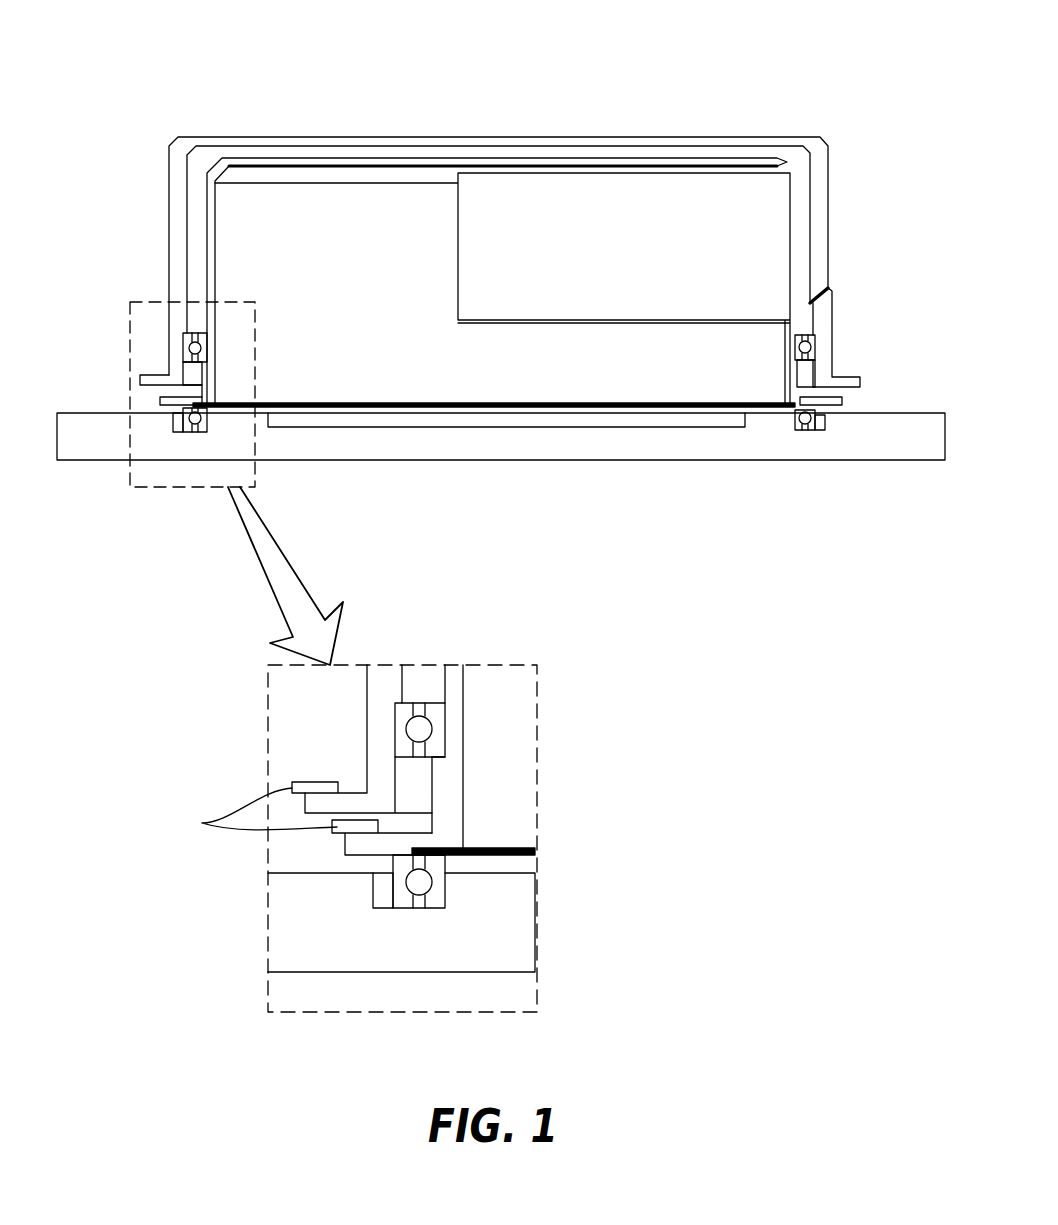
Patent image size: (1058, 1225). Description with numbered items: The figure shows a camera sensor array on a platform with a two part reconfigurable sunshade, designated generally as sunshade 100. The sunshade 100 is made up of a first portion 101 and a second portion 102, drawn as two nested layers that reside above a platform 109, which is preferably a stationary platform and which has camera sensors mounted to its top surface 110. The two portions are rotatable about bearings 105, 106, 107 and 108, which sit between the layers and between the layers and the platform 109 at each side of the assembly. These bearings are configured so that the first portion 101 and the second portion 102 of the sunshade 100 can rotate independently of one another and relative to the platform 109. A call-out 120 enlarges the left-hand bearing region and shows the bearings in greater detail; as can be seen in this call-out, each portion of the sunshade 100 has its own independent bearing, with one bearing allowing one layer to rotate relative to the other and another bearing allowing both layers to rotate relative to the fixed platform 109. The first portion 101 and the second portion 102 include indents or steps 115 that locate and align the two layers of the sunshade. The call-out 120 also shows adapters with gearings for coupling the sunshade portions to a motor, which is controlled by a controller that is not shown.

The two part reconfigurable sunshade 100 is at (578, 72).
The first portion 101 is at (828, 188).
The second portion 102 is at (168, 399).
The bearing 105 is at (185, 347).
The bearing 106 is at (815, 344).
The bearing 107 is at (175, 417).
The bearing 108 is at (825, 427).
The platform 109 is at (572, 443).
The top surface 110 is at (655, 405).
The indents or steps 115 is at (436, 758).
The call-out 120 is at (270, 665).